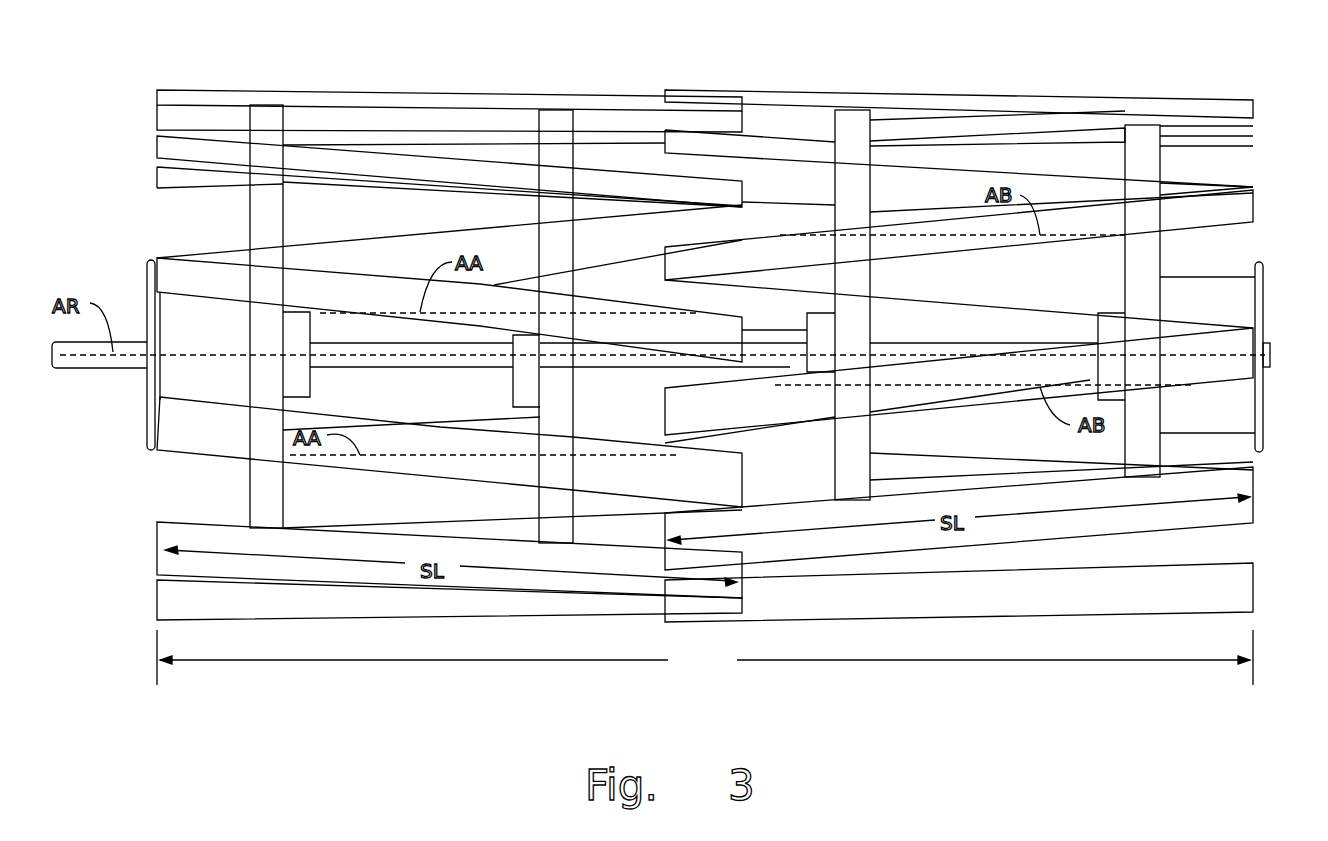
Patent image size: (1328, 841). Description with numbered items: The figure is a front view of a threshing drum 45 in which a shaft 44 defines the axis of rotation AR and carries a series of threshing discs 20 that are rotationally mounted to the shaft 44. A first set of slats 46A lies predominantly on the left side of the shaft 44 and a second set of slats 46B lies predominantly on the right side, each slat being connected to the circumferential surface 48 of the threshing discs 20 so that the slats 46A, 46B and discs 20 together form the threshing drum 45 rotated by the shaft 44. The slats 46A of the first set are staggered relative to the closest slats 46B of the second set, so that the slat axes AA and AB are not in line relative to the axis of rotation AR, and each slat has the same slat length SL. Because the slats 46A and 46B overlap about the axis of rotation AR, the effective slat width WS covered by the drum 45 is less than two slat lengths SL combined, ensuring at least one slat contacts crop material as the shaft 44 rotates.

The threshing discs 20 is at (303, 326).
The shaft 44 is at (370, 367).
The threshing drum 45 is at (820, 672).
The first set of slats 46A is at (158, 178).
The second set of slats 46B is at (905, 90).
The circumferential surface 48 is at (281, 388).